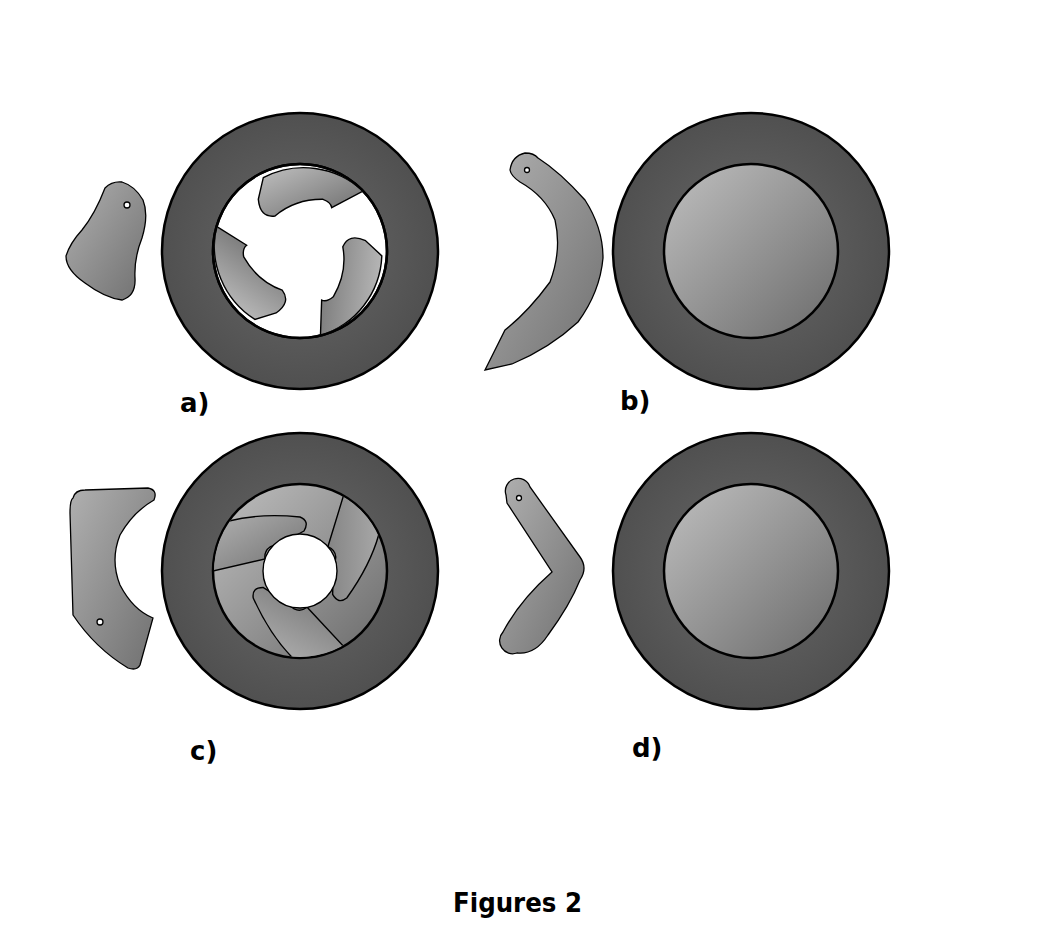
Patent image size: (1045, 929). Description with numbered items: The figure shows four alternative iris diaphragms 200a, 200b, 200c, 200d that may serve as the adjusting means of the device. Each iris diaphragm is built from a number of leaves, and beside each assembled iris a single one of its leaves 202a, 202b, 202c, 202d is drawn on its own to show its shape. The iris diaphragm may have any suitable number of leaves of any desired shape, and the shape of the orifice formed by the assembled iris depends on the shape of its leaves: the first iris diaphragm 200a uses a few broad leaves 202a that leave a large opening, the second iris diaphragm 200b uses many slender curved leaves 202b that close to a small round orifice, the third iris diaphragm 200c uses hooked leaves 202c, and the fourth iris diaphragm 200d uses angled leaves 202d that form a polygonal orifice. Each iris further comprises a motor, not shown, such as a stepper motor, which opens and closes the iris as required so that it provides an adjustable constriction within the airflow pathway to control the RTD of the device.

The iris diaphragm 200a is at (227, 115).
The leaf 202a is at (113, 213).
The iris diaphragm 200b is at (678, 115).
The leaf 202b is at (548, 167).
The iris diaphragm 200c is at (430, 492).
The leaf 202c is at (113, 507).
The iris diaphragm 200d is at (867, 467).
The leaf 202d is at (543, 537).